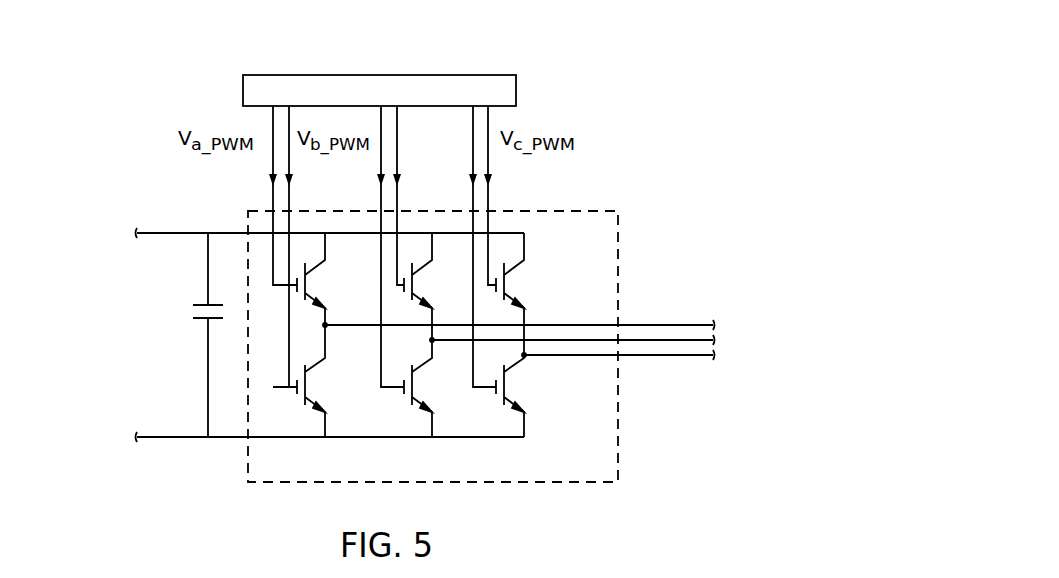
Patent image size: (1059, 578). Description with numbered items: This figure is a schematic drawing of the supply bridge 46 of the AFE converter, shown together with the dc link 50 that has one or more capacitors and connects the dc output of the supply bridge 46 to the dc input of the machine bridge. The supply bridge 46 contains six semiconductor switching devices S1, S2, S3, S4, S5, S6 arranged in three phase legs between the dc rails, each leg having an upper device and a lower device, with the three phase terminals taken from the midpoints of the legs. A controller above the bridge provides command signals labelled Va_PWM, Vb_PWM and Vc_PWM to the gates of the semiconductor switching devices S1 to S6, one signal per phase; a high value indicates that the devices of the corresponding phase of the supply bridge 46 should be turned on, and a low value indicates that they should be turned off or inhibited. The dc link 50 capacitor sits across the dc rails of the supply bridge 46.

The supply bridge 46 is at (425, 339).
The dc link 50 is at (173, 363).
The semiconductor switching device S1 is at (322, 279).
The semiconductor switching device S2 is at (314, 381).
The semiconductor switching device S3 is at (429, 286).
The semiconductor switching device S4 is at (421, 388).
The semiconductor switching device S5 is at (521, 294).
The semiconductor switching device S6 is at (513, 396).